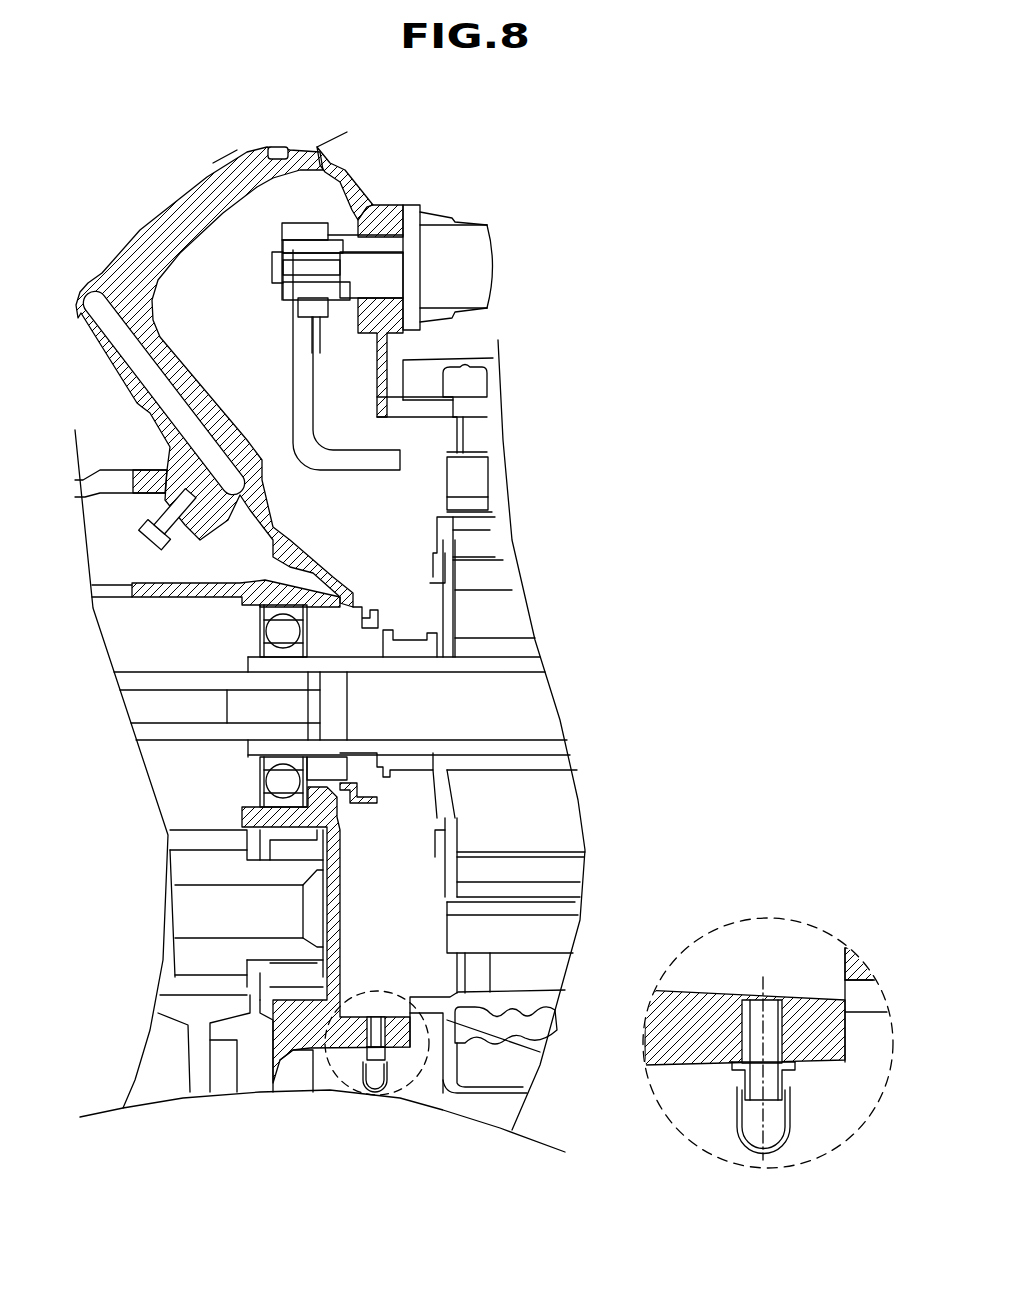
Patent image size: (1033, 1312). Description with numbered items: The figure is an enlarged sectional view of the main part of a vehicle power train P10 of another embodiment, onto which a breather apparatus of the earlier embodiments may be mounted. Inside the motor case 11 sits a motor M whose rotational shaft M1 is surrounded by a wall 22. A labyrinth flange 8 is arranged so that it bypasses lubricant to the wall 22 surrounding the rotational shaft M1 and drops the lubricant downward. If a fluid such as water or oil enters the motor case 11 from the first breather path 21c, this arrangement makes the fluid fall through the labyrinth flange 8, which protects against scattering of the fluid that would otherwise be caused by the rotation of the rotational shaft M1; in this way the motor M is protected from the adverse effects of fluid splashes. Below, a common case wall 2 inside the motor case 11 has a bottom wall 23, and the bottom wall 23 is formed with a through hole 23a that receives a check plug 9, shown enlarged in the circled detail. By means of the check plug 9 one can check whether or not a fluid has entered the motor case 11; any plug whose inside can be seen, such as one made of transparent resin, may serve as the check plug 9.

The power train P10 is at (118, 212).
The first breather path 21c is at (245, 430).
The motor M is at (440, 483).
The labyrinth flange 8 is at (368, 612).
The rotational shaft M1 is at (410, 665).
The wall 22 is at (353, 797).
The bottom wall 23 is at (330, 1050).
The check plug 9 is at (373, 1097).
The common case wall 2 is at (399, 1057).
The motor case 11 is at (465, 1100).
The through hole 23a is at (755, 1013).